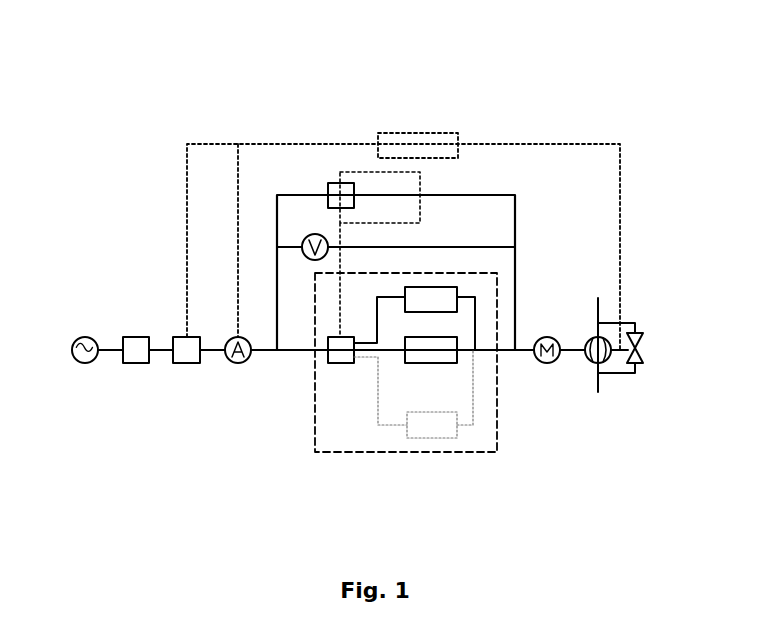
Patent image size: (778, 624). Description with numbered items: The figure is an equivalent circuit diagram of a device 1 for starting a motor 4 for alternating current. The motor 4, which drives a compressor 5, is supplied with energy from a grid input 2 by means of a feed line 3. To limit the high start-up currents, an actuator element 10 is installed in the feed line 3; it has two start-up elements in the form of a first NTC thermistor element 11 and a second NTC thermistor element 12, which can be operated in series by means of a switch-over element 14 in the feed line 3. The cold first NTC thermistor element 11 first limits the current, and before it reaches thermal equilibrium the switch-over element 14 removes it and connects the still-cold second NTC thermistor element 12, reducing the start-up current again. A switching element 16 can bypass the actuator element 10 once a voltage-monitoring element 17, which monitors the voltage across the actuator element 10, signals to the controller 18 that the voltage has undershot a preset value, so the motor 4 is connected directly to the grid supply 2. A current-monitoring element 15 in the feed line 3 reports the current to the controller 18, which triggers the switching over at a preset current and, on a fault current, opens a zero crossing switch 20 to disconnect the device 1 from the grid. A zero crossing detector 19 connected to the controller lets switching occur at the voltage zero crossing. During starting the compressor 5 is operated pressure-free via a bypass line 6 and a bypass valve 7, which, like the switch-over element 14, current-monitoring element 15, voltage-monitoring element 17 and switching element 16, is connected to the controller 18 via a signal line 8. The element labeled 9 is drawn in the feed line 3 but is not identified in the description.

The device 1 is at (100, 118).
The grid input 2 is at (83, 363).
The feed line 3 is at (297, 347).
The motor 4 is at (545, 363).
The compressor 5 is at (603, 363).
The bypass line 6 is at (633, 323).
The bypass valve 7 is at (640, 347).
The signal line 8 is at (385, 170).
The switch 9 is at (140, 363).
The actuator element 10 is at (482, 273).
The first NTC thermistor element 11 is at (448, 312).
The second NTC thermistor element 12 is at (425, 363).
The switch-over element 14 is at (343, 363).
The current-monitoring element 15 is at (240, 363).
The switching element 16 is at (330, 183).
The voltage-monitoring element 17 is at (315, 234).
The controller 18 is at (437, 133).
The zero crossing detector 19 is at (211, 438).
The zero crossing switch 20 is at (190, 363).